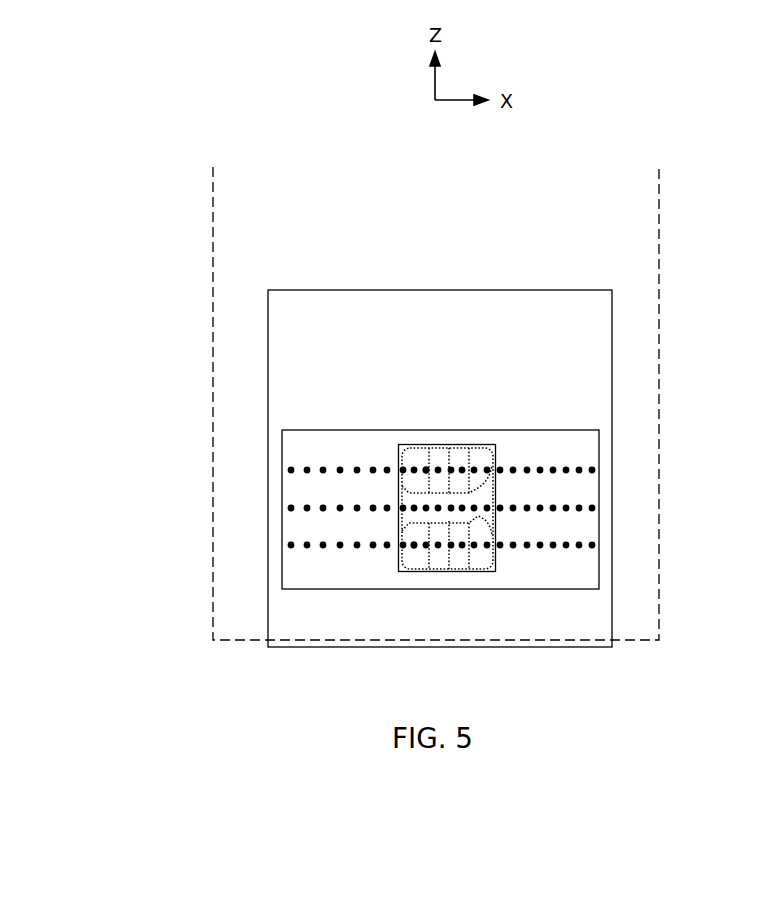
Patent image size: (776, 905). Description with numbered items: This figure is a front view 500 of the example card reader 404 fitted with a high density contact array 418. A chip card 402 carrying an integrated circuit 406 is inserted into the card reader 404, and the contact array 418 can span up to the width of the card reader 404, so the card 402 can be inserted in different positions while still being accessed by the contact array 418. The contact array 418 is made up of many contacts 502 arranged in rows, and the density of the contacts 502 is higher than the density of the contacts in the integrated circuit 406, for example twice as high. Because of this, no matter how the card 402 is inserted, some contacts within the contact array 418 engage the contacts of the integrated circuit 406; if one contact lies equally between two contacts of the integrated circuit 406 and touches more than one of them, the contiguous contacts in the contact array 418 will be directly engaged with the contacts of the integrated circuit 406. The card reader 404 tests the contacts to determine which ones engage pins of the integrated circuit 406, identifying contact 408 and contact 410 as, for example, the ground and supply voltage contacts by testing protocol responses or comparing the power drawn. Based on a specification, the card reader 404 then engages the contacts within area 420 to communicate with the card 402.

The front view 500 is at (118, 763).
The chip card 402 is at (659, 222).
The card reader 404 is at (612, 340).
The contact array 418 is at (599, 450).
The contacts 502 is at (307, 467).
The integrated circuit 406 is at (494, 454).
The contact 408 is at (423, 468).
The contact 410 is at (412, 549).
The area 420 is at (493, 576).